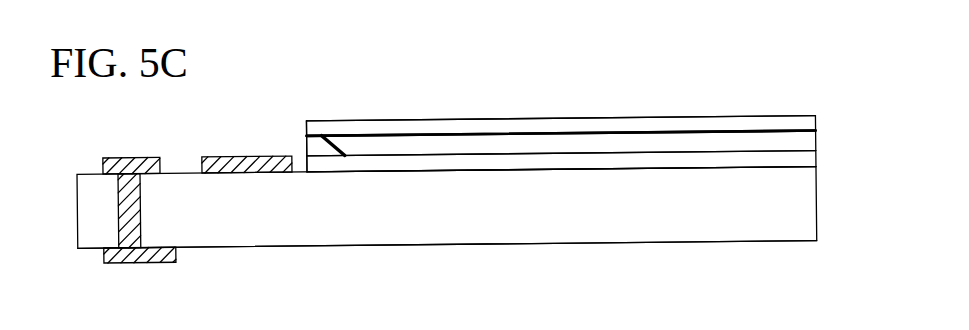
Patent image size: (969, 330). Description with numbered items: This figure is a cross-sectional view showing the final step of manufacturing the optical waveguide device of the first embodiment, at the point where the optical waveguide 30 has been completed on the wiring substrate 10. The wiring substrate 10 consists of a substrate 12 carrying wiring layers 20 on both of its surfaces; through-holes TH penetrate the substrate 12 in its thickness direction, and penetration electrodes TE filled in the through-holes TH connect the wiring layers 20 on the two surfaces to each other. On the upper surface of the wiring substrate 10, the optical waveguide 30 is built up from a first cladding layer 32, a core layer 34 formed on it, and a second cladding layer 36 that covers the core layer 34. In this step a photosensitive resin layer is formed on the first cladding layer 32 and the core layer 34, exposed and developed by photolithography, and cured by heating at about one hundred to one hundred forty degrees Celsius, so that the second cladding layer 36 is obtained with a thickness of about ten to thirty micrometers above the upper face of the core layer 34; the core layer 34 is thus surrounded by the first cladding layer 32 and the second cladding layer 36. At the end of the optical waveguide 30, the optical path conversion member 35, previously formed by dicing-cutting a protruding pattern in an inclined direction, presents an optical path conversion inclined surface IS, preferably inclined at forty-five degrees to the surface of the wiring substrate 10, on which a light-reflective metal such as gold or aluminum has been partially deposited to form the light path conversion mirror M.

The wiring substrate 10 is at (823, 168).
The substrate 12 is at (772, 230).
The wiring layer 20 is at (103, 166).
The through-hole TH is at (118, 193).
The penetration electrode TE is at (130, 228).
The optical waveguide 30 is at (866, 115).
The first cladding layer 32 is at (813, 164).
The core layer 34 is at (813, 144).
The second cladding layer 36 is at (813, 122).
The optical path conversion member 35 is at (307, 139).
The light path conversion mirror M is at (326, 172).
The optical path conversion inclined surface IS is at (326, 172).